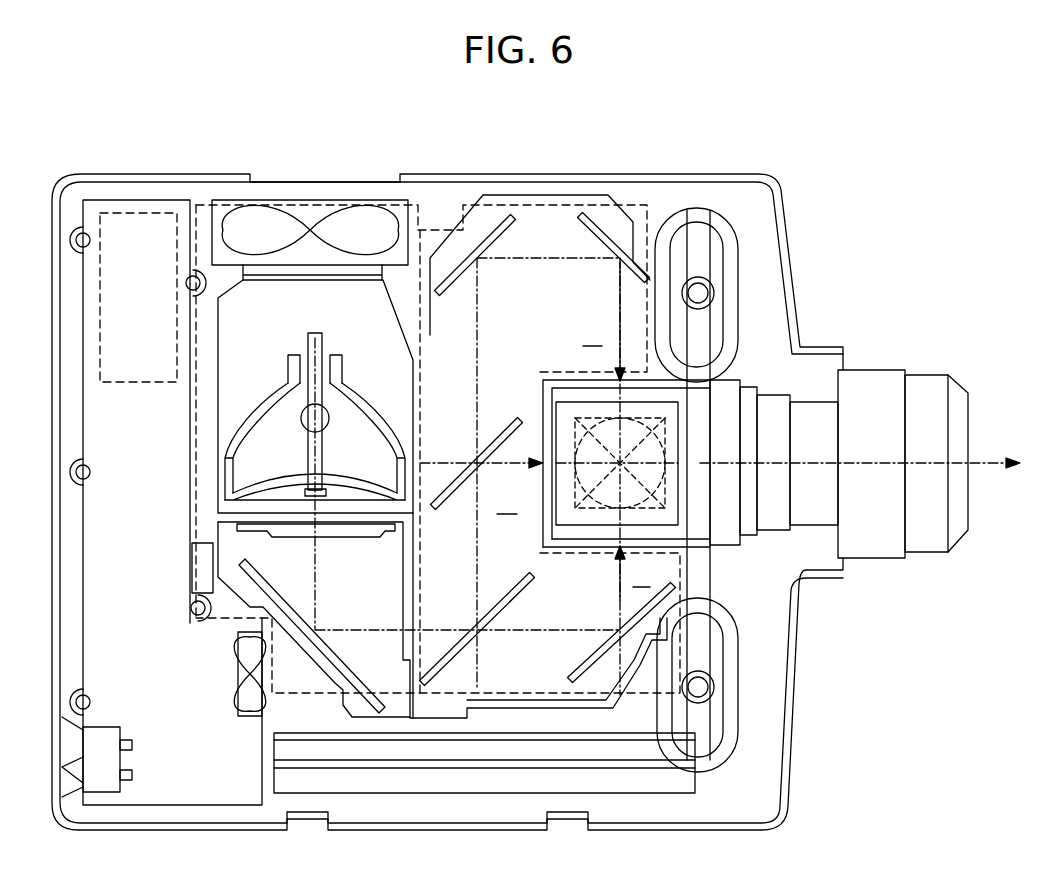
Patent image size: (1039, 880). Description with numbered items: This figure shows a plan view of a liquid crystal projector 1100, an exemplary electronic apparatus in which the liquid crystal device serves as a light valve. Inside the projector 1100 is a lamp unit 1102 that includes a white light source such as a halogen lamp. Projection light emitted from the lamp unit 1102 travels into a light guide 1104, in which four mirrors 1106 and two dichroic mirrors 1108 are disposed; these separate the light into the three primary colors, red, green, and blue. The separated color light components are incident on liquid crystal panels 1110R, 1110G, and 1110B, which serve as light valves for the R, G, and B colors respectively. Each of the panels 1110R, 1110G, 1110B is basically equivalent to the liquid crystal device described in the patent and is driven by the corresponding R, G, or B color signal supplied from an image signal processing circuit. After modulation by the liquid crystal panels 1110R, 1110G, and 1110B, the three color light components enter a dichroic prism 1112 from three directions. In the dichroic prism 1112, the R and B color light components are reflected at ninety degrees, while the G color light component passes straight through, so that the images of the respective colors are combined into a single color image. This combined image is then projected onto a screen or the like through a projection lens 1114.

The projector 1100 is at (795, 176).
The lamp unit 1102 is at (363, 317).
The light guide 1104 is at (488, 193).
The mirror 1106 is at (590, 238).
The dichroic mirror 1108 is at (488, 455).
The liquid crystal panel 1110R is at (585, 383).
The liquid crystal panel 1110G is at (548, 432).
The liquid crystal panel 1110B is at (582, 545).
The dichroic prism 1112 is at (740, 537).
The projection lens 1114 is at (936, 383).